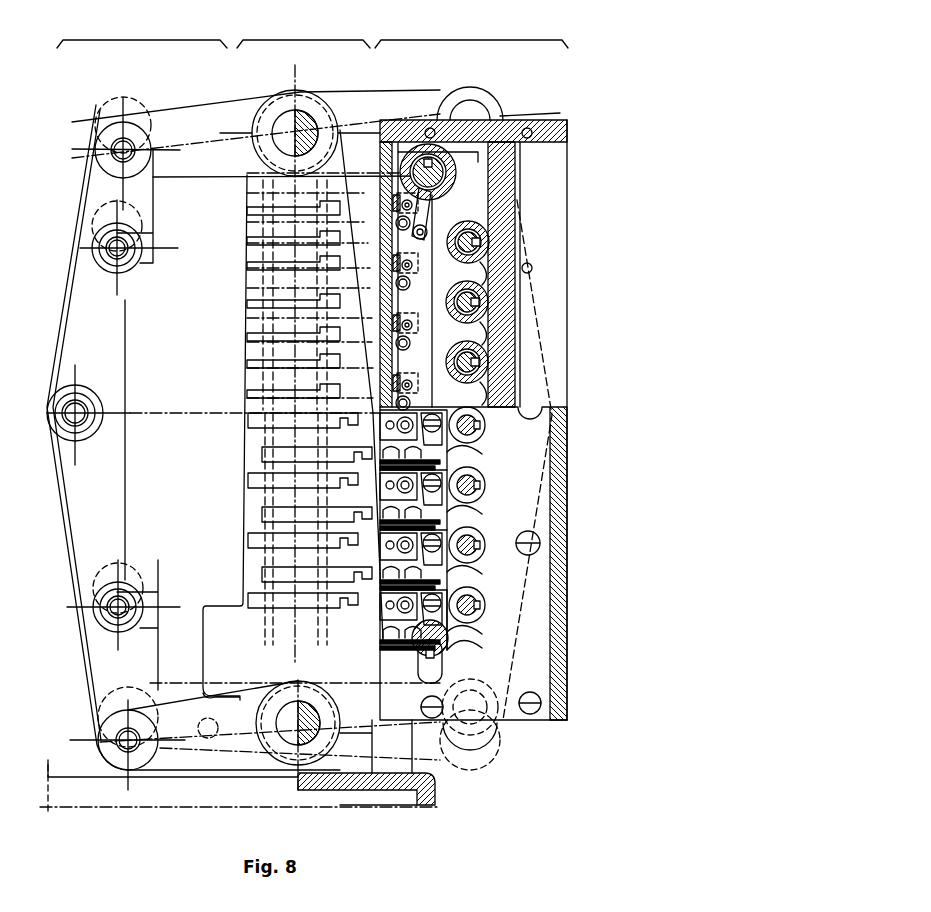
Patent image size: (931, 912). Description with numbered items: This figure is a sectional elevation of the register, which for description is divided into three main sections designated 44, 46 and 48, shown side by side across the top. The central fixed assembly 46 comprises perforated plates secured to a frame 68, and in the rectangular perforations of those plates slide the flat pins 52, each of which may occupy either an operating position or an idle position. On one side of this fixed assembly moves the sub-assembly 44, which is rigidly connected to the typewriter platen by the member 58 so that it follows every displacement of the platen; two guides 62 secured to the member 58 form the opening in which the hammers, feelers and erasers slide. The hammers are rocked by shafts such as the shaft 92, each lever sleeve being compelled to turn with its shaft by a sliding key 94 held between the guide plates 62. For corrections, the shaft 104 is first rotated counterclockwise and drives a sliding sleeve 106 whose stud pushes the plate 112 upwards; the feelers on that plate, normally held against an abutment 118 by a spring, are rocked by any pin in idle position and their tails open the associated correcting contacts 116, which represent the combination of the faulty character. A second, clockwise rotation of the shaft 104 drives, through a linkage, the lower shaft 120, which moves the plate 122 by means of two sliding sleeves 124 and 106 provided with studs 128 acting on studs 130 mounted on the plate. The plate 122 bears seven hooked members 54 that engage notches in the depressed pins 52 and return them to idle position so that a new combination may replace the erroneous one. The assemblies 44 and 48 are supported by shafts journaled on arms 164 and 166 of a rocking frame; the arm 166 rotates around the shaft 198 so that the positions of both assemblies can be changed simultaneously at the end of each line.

The section 48 is at (142, 32).
The fixed assembly 46 is at (303, 32).
The section 44 is at (471, 32).
The arm 164 is at (190, 110).
The member 58 is at (557, 118).
The sliding sleeve 106 is at (452, 176).
The shaft 104 is at (445, 192).
The stud 128 is at (448, 226).
The stud 130 is at (421, 240).
The hooked member 54 is at (350, 258).
The shaft 92 is at (470, 308).
The plate 122 is at (428, 385).
The plate 112 is at (452, 452).
The abutment 118 is at (462, 470).
The key 94 is at (482, 486).
The correcting contact 116 is at (462, 570).
The flat pin 52 is at (341, 608).
The sliding sleeve 124 is at (455, 645).
The lower shaft 120 is at (445, 665).
The arm 166 is at (190, 686).
The shaft 198 is at (290, 726).
The guide 62 is at (558, 675).
The frame 68 is at (435, 790).